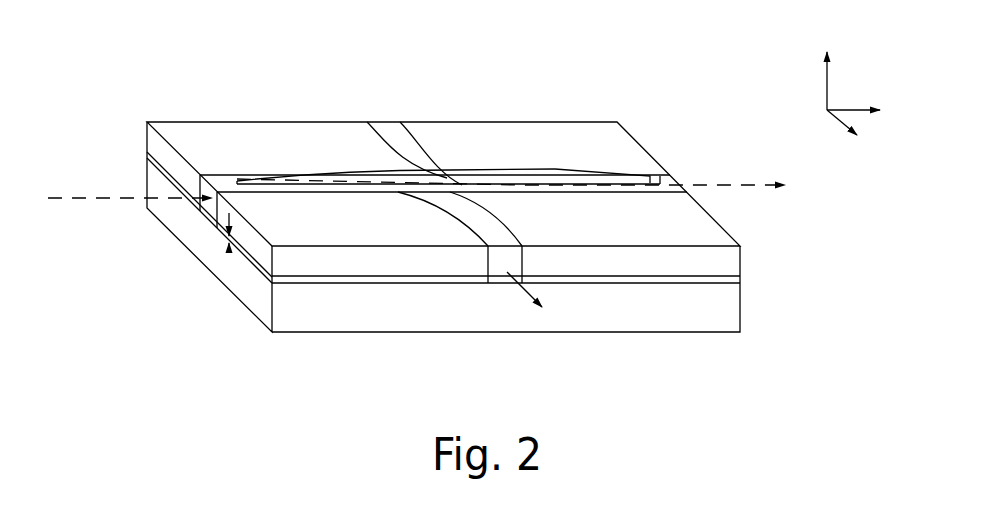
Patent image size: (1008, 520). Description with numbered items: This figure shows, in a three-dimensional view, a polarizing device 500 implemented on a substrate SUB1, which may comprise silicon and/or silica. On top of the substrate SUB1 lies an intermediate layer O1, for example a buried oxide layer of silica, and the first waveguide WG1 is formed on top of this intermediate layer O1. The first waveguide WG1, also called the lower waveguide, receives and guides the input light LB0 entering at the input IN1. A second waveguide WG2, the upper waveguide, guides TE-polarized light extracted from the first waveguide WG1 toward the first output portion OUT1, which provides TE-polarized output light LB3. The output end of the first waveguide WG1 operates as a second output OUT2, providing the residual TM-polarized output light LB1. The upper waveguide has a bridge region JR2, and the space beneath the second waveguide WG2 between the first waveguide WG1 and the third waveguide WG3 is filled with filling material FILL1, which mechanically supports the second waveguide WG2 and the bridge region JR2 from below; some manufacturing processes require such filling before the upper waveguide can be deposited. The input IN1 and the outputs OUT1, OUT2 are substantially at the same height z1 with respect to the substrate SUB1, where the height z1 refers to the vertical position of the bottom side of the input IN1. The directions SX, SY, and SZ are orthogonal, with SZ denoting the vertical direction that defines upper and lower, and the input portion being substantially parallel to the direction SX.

The polarizing device 500 is at (192, 35).
The filling material FILL1 is at (238, 130).
The intermediate layer O1 is at (740, 280).
The substrate SUB1 is at (740, 305).
The input IN1 is at (200, 210).
The first waveguide WG1 is at (218, 175).
The second waveguide WG2 is at (512, 175).
The third waveguide WG3 is at (660, 178).
The bridge region JR2 is at (442, 175).
The first output portion OUT1 is at (675, 190).
The second output OUT2 is at (495, 268).
The input light LB0 is at (78, 198).
The TE-polarized light LB3 is at (757, 185).
The polarized output light LB1 is at (527, 293).
The height z1 is at (242, 232).
The vertical direction SZ is at (825, 69).
The direction SX is at (872, 112).
The direction SY is at (859, 136).